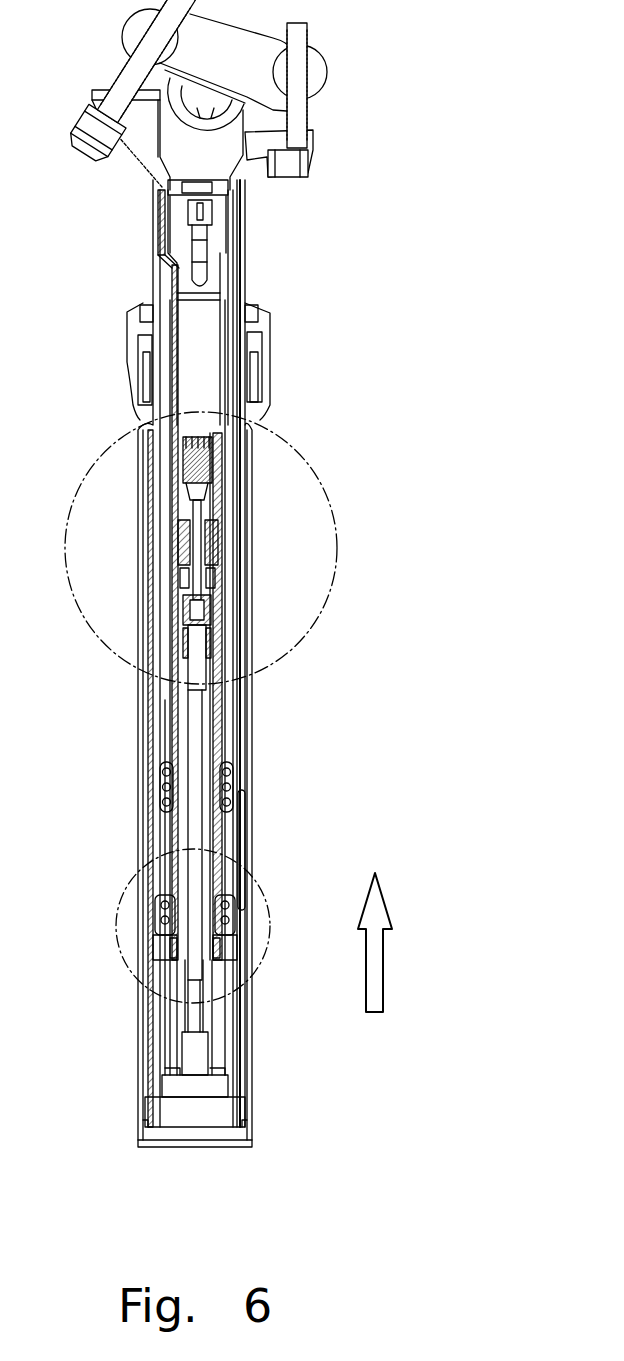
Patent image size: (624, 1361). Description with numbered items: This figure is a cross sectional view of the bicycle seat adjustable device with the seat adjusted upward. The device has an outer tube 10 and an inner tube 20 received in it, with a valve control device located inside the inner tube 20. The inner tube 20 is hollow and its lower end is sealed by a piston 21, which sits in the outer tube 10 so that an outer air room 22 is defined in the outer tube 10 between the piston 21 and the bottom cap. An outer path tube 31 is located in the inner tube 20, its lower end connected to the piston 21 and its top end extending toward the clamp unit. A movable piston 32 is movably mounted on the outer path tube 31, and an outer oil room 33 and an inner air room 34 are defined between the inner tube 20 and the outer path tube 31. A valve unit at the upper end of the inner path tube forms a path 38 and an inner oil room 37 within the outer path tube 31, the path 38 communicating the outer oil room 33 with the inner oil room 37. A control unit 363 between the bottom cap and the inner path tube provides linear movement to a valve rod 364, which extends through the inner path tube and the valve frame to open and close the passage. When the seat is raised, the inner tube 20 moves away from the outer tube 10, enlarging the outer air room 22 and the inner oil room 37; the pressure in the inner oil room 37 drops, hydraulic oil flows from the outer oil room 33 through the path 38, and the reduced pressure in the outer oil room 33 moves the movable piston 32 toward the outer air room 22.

The outer tube 10 is at (140, 987).
The inner tube 20 is at (157, 910).
The piston 21 is at (153, 942).
The outer air room 22 is at (158, 1040).
The outer path tube 31 is at (170, 850).
The movable piston 32 is at (232, 777).
The outer oil room 33 is at (242, 865).
The inner air room 34 is at (228, 292).
The inner oil room 37 is at (213, 363).
The path 38 is at (222, 725).
The control unit 363 is at (200, 1055).
The valve rod 364 is at (195, 942).